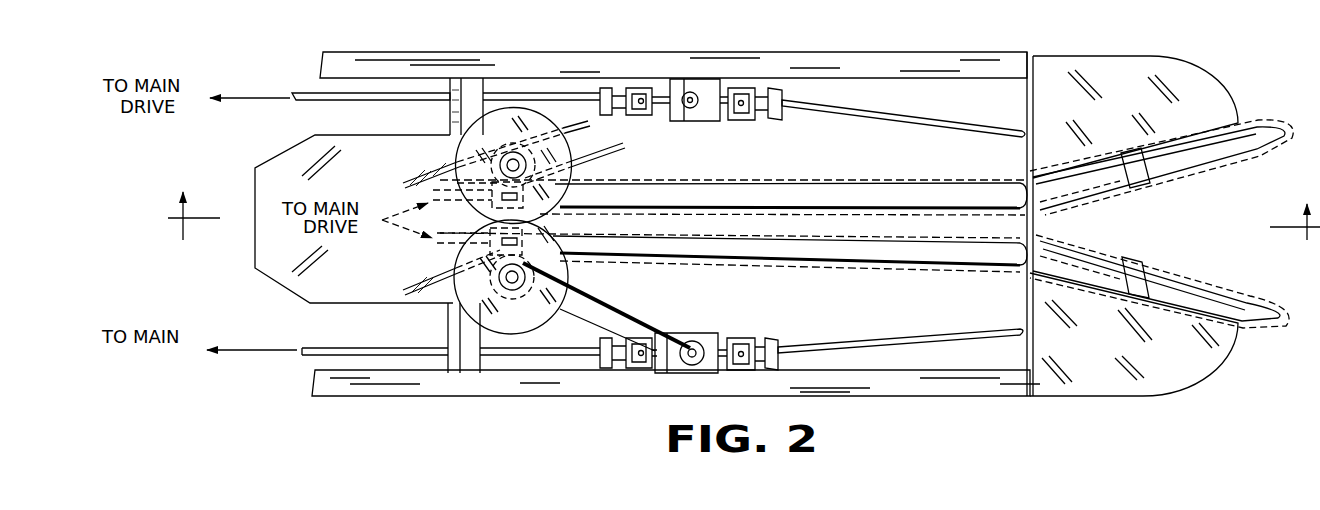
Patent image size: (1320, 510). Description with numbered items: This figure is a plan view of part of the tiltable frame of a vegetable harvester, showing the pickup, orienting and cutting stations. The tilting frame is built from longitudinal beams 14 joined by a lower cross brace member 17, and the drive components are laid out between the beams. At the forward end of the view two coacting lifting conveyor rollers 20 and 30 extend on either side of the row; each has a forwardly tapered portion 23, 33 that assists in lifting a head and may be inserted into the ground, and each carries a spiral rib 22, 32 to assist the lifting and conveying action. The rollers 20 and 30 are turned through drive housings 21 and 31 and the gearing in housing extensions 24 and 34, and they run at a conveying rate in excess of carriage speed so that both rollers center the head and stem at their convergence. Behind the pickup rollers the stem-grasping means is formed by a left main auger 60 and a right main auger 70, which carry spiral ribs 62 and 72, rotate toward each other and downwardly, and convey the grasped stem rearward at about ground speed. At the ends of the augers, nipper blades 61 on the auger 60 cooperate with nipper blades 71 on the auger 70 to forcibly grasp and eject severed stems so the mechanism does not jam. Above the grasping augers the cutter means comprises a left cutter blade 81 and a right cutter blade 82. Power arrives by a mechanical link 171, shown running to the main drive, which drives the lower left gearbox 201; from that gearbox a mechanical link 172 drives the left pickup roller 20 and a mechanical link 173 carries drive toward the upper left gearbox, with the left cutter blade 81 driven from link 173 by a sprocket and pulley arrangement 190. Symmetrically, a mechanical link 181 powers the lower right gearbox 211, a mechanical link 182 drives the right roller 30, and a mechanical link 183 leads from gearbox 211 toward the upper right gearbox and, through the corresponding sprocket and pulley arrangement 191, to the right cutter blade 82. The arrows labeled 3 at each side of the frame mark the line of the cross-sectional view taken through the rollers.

The section line of FIG. 3 is at (744, 232).
The longitudinal beams 14 is at (872, 60).
The lower cross brace member 17 is at (476, 86).
The lifting conveyor roller 20 is at (1207, 292).
The drive housing 21 is at (1193, 357).
The spiral rib 22 is at (1085, 243).
The forward tapered portion 23 is at (1263, 310).
The housing extension 24 is at (1137, 262).
The lifting conveyor roller 30 is at (1190, 158).
The drive housing 31 is at (1193, 88).
The spiral rib 32 is at (1090, 200).
The forward tapered portion 33 is at (1267, 133).
The housing extension 34 is at (1140, 183).
The left main auger 60 is at (808, 250).
The nipper blades 61 is at (437, 253).
The spiral ribs 62 is at (882, 267).
The right main auger 70 is at (808, 194).
The nipper blades 71 is at (447, 152).
The spiral ribs 72 is at (868, 183).
The left cutter blade 81 is at (460, 282).
The right cutter blade 82 is at (457, 183).
The mechanical link 171 is at (355, 348).
The mechanical link 172 is at (968, 320).
The mechanical link 173 is at (700, 333).
The mechanical link 181 is at (355, 98).
The mechanical link 182 is at (930, 125).
The mechanical link 183 is at (695, 106).
The sprocket and pulley arrangement 190 is at (603, 297).
The upper crank arm 191 is at (615, 146).
The lower left gearbox 201 is at (690, 341).
The lower right gearbox 211 is at (693, 86).